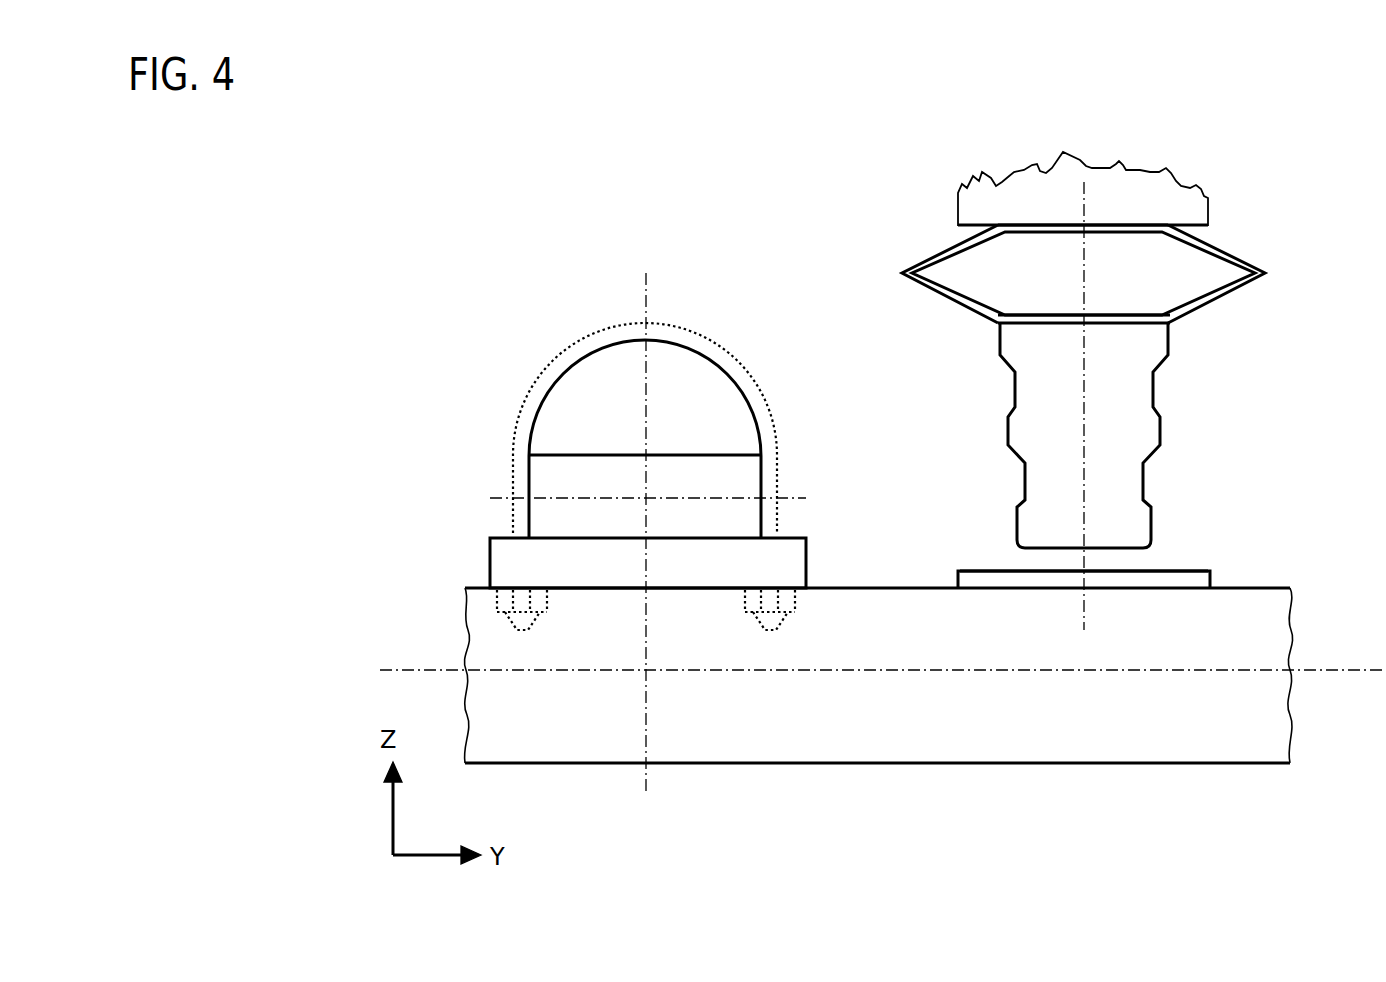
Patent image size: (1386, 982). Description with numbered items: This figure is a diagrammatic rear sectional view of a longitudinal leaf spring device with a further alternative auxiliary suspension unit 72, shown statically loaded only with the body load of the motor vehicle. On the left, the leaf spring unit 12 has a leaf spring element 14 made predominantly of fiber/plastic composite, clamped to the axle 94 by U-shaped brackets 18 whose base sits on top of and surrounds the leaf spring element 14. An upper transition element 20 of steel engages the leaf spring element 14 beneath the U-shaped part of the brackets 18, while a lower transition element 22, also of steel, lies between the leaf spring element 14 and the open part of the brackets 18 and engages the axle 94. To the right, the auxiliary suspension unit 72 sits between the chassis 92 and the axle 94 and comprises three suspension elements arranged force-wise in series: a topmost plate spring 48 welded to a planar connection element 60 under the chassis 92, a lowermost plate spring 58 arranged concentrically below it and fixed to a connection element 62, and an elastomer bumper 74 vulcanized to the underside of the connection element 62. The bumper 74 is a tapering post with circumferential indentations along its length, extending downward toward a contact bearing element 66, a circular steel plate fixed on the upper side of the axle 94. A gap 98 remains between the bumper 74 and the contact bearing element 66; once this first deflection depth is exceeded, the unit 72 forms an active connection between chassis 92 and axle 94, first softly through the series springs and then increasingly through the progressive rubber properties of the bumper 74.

The leaf spring unit 12 is at (503, 292).
The leaf spring element 14 is at (547, 482).
The U-shaped bracket 18 is at (608, 336).
The upper transition element 20 is at (702, 390).
The lower transition element 22 is at (518, 567).
The topmost plate spring 48 is at (1218, 247).
The lowermost plate spring 58 is at (1222, 300).
The connection element 60 is at (1122, 227).
The connection element 62 is at (1163, 330).
The contact bearing element 66 is at (1005, 582).
The auxiliary suspension unit 72 is at (1263, 172).
The suspension element or bumper 74 is at (1143, 421).
The chassis 92 is at (992, 202).
The axle 94 is at (1217, 737).
The gap 98 is at (1115, 560).